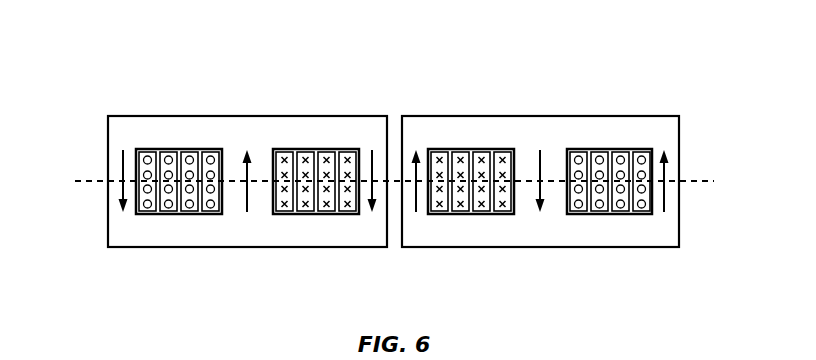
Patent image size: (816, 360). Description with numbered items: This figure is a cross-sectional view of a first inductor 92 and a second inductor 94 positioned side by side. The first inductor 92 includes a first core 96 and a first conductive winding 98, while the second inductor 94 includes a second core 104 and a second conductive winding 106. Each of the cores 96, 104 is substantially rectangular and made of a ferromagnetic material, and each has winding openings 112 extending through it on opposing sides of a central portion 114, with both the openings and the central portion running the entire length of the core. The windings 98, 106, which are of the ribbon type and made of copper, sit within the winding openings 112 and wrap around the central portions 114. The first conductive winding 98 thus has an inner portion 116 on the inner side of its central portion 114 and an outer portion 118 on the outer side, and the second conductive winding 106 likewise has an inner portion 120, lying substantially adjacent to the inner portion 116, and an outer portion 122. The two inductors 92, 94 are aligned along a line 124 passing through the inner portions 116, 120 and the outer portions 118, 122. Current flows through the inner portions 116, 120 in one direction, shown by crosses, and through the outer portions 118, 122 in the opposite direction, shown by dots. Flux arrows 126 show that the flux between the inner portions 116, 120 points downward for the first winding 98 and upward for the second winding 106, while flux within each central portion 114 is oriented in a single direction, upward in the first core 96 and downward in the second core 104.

The first inductor 92 is at (230, 156).
The second inductor 94 is at (561, 156).
The first core 96 is at (112, 122).
The first conductive winding 98 is at (133, 212).
The second core 104 is at (675, 122).
The second conductive winding 106 is at (515, 212).
The winding openings 112 is at (168, 149).
The central portion 114 is at (262, 163).
The inner portion of the first conductive winding 116 is at (316, 227).
The outer portion of the first conductive winding 118 is at (179, 226).
The inner portion of the second conductive winding 120 is at (471, 227).
The outer portion of the second conductive winding 122 is at (608, 227).
The line 124 is at (90, 185).
The flux arrows 126 is at (122, 168).